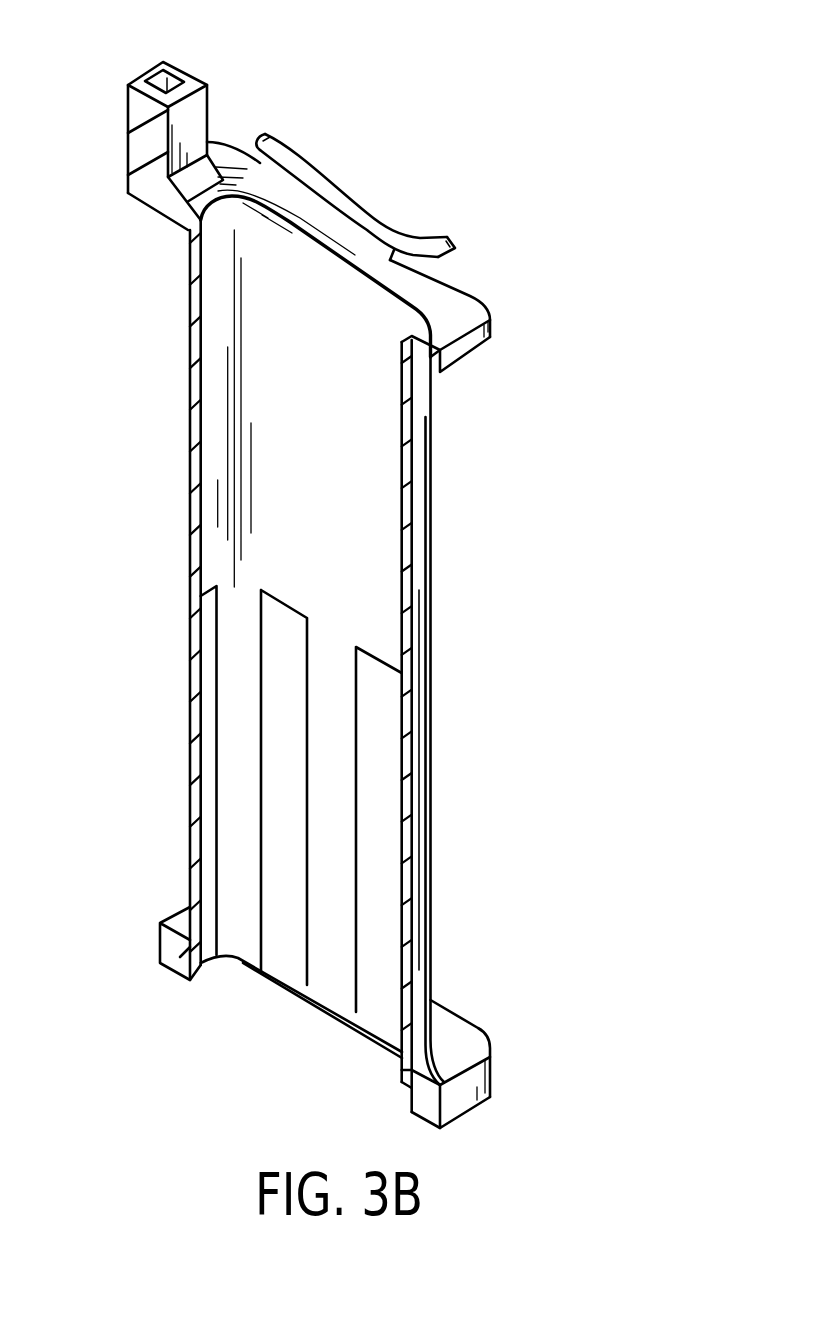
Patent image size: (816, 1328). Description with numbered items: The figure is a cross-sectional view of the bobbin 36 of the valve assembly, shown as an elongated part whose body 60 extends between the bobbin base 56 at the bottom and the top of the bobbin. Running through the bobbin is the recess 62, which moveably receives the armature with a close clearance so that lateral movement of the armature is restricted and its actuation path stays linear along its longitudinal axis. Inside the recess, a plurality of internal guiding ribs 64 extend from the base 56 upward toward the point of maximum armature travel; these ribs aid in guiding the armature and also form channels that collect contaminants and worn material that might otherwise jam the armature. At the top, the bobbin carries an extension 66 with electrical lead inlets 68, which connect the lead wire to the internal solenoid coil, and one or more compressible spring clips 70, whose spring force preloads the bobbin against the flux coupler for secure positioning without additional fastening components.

The bobbin 36 is at (566, 238).
The bobbin base 56 is at (493, 1077).
The body 60 is at (431, 670).
The recess 62 is at (315, 390).
The internal guiding ribs 64 is at (280, 955).
The extension 66 is at (128, 128).
The electrical lead inlets 68 is at (178, 80).
The spring clips 70 is at (337, 197).